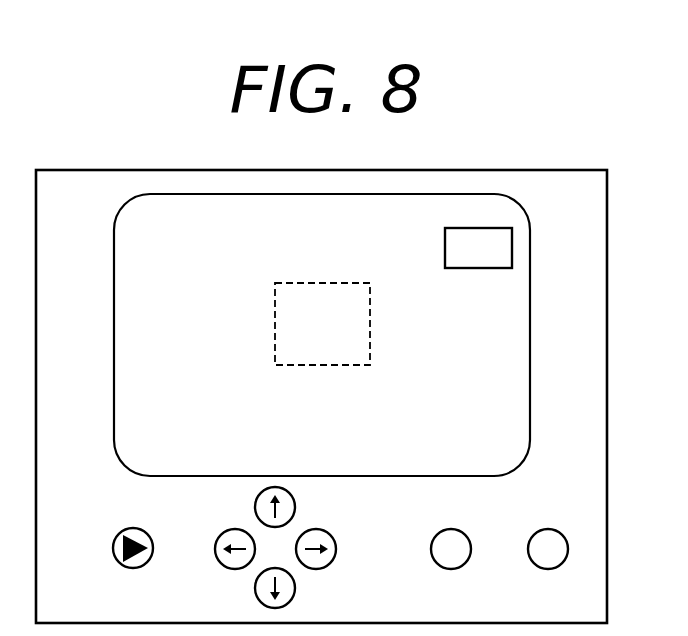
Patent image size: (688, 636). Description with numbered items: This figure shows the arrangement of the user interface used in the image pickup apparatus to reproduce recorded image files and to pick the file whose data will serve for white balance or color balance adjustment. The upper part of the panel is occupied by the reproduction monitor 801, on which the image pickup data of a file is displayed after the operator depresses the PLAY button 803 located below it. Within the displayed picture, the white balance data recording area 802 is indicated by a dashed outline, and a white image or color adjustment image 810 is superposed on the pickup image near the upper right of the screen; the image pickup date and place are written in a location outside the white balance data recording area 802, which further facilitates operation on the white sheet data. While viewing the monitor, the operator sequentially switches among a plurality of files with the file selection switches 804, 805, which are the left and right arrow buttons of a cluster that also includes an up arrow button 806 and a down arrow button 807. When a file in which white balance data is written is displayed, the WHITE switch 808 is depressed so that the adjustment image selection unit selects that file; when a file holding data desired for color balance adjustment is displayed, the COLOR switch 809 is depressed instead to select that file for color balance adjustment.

The reproduction monitor 801 is at (530, 250).
The white balance data recording area 802 is at (342, 283).
The PLAY button 803 is at (125, 531).
The file selection switch 804 is at (217, 535).
The file selection switch 805 is at (336, 548).
The up arrow button 806 is at (295, 505).
The down arrow button 807 is at (295, 588).
The WHITE switch 808 is at (459, 531).
The COLOR switch 809 is at (560, 531).
The white image or color adjustment image 810 is at (469, 268).